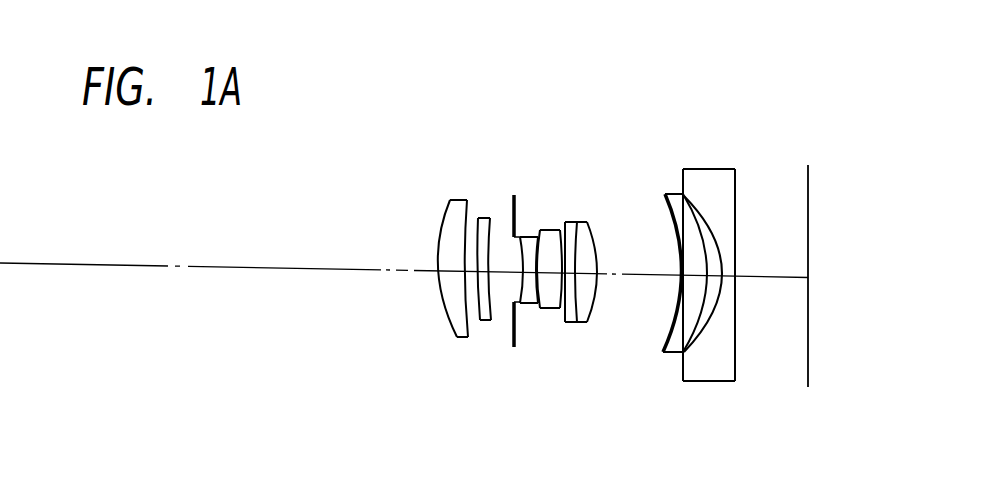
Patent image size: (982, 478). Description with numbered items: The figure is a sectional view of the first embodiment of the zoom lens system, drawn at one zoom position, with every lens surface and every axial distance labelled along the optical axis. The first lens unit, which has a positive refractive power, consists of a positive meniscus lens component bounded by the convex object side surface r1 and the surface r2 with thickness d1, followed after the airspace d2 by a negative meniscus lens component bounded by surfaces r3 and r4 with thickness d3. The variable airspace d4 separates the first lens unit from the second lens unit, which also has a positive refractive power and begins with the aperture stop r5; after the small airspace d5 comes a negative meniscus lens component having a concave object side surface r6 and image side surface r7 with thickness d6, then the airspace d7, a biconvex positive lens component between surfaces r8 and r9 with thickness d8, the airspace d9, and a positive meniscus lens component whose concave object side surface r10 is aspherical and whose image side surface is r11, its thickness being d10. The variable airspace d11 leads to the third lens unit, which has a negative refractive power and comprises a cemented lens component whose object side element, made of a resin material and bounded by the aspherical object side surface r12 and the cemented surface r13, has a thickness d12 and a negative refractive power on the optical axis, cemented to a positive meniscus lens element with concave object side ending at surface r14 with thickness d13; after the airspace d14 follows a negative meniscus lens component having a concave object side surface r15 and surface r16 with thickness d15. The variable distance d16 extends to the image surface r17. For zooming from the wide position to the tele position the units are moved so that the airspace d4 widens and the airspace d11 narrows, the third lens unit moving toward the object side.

The radius of curvature of first surface r1 is at (452, 214).
The radius of curvature of second surface r2 is at (468, 208).
The radius of curvature of third surface r3 is at (476, 218).
The radius of curvature of fourth surface r4 is at (494, 232).
The aperture stop surface r5 is at (515, 222).
The radius of curvature of sixth surface r6 is at (532, 236).
The radius of curvature of seventh surface r7 is at (542, 230).
The radius of curvature of eighth surface r8 is at (558, 230).
The radius of curvature of ninth surface r9 is at (564, 222).
The aspherical object side surface of positive meniscus lens component r10 is at (577, 222).
The radius of curvature of eleventh surface r11 is at (589, 222).
The aspherical object side surface of third lens unit r12 is at (665, 204).
The cemented surface r13 is at (680, 194).
The radius of curvature of fourteenth surface r14 is at (703, 212).
The radius of curvature of fifteenth surface r15 is at (716, 213).
The radius of curvature of sixteenth surface r16 is at (737, 194).
The image surface r17 is at (809, 188).
The thickness of first lens element d1 is at (452, 273).
The airspace between first and second lens components d2 is at (473, 295).
The thickness of second lens element d3 is at (487, 323).
The variable airspace between first and second lens units d4 is at (499, 293).
The airspace between stop and third lens element d5 is at (521, 262).
The thickness of third lens element d6 is at (527, 305).
The airspace between third and fourth lens elements d7 is at (545, 295).
The thickness of fourth lens element d8 is at (562, 293).
The airspace between fourth and fifth lens elements d9 is at (582, 263).
The thickness of fifth lens element d10 is at (580, 300).
The variable airspace between second and third lens units d11 is at (613, 285).
The thickness of sixth lens element d12 is at (681, 282).
The thickness of seventh lens element d13 is at (688, 330).
The airspace between cemented component and eighth lens element d14 is at (702, 330).
The thickness of eighth lens element d15 is at (722, 330).
The variable back focal distance d16 is at (772, 280).